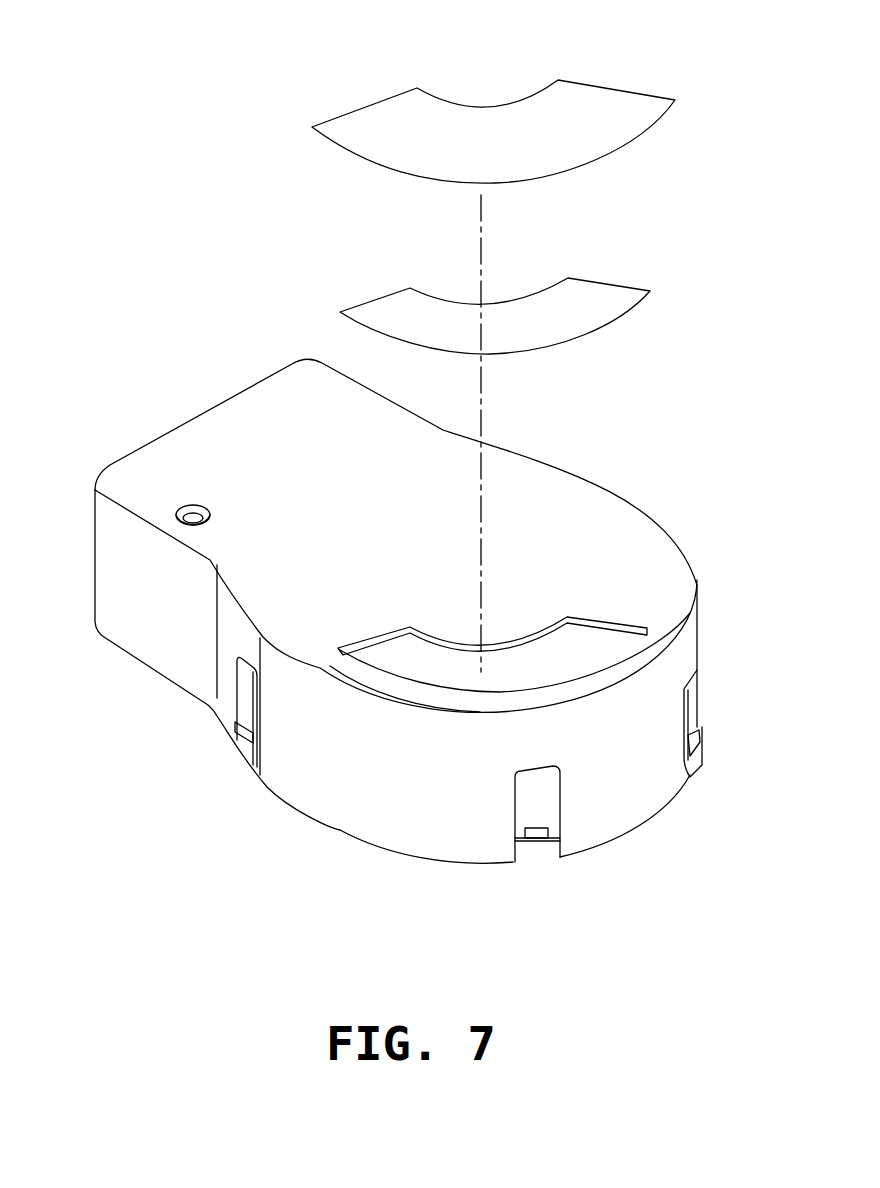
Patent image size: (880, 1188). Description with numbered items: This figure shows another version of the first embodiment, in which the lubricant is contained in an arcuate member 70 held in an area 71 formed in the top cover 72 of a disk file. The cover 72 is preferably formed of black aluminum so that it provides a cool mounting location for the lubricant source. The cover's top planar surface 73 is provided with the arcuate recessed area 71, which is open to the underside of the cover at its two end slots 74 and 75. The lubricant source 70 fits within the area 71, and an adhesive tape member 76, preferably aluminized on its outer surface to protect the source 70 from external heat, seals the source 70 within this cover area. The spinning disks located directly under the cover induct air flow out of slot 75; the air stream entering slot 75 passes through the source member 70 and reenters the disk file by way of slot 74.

The arcuate member 70 is at (583, 278).
The area 71 is at (552, 657).
The top cover 72 is at (698, 668).
The top planar surface 73 is at (500, 483).
The end slot 74 is at (607, 623).
The end slot 75 is at (370, 650).
The adhesive tape member 76 is at (582, 80).